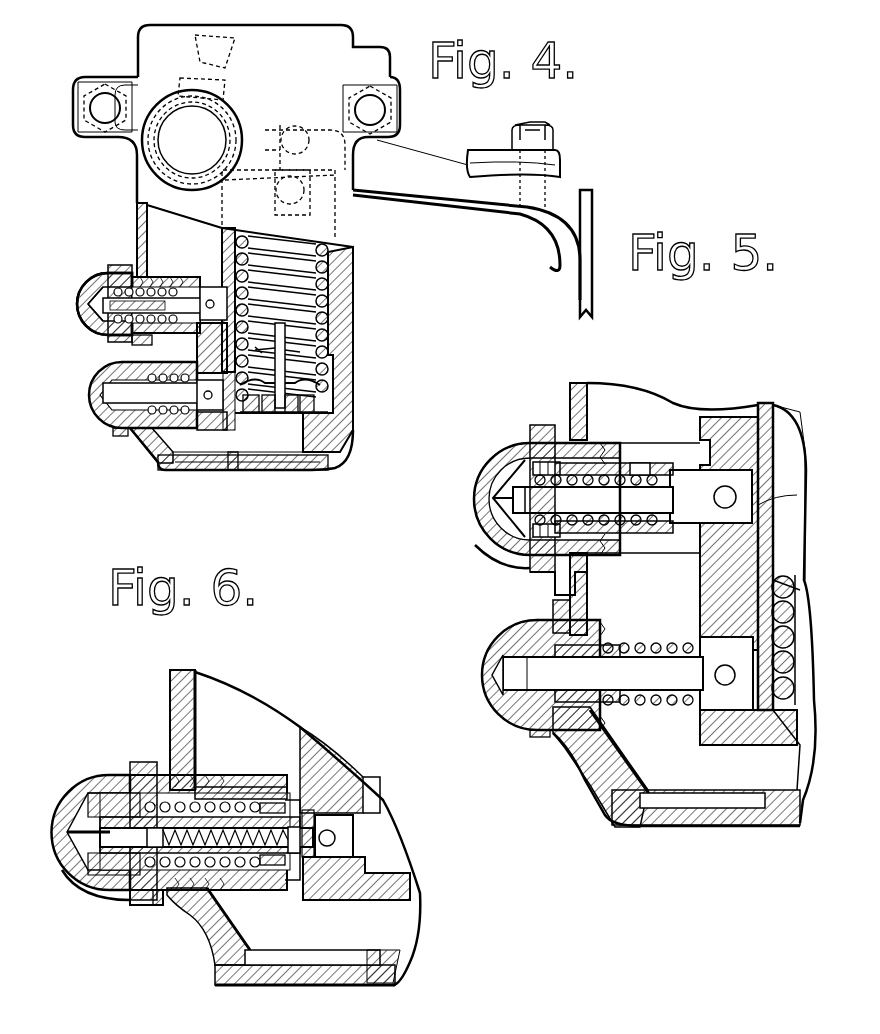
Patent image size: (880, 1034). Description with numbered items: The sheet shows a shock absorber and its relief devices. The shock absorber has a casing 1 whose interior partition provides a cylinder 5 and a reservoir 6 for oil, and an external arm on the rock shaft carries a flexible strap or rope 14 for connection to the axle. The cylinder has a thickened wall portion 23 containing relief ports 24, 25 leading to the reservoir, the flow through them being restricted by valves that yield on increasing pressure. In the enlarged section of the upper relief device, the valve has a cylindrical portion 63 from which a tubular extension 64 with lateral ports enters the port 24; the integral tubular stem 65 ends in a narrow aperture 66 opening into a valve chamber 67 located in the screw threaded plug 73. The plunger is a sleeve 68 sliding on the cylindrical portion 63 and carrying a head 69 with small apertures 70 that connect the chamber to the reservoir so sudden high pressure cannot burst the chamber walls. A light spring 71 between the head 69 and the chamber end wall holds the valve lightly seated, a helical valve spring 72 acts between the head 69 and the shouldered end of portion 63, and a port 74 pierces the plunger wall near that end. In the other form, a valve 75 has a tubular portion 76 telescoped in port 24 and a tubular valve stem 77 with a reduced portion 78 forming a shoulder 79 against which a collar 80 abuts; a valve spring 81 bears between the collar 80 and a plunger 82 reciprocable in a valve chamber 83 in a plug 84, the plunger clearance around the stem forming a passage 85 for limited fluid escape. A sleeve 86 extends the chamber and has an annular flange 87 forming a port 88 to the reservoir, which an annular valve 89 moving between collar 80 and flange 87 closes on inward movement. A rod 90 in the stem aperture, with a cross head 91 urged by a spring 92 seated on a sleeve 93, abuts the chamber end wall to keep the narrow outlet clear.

In FIG. 4, the casing 1 is at (352, 322).
In FIG. 4, the cylinder 5 is at (330, 390).
In FIG. 5, the cylinder 5 is at (795, 560).
In FIG. 6, the cylinder 5 is at (405, 862).
In FIG. 4, the reservoir 6 is at (152, 233).
In FIG. 5, the reservoir 6 is at (680, 420).
In FIG. 4, the strap or rope 14 is at (580, 280).
In FIG. 4, the thickened wall portion 23 is at (197, 355).
In FIG. 5, the thickened wall portion 23 is at (702, 585).
In FIG. 4, the relief port 24 is at (215, 280).
In FIG. 5, the relief port 24 is at (773, 425).
In FIG. 4, the relief port 25 is at (200, 428).
In FIG. 5, the relief port 25 is at (641, 652).
In FIG. 6, the relief port 25 is at (360, 825).
In FIG. 4, the cylindrical portion 63 is at (190, 298).
In FIG. 5, the cylindrical portion 63 is at (690, 470).
In FIG. 5, the tubular extension 64 is at (777, 502).
In FIG. 5, the tubular stem 65 is at (610, 465).
In FIG. 5, the narrow aperture 66 is at (495, 510).
In FIG. 4, the valve chamber 67 is at (80, 295).
In FIG. 5, the valve chamber 67 is at (490, 480).
In FIG. 5, the sleeve 68 is at (575, 460).
In FIG. 5, the head 69 is at (500, 555).
In FIG. 5, the small apertures 70 is at (540, 440).
In FIG. 5, the light spring 71 is at (530, 470).
In FIG. 5, the helical valve spring 72 is at (555, 590).
In FIG. 4, the screw threaded plug 73 is at (95, 330).
In FIG. 5, the screw threaded plug 73 is at (535, 565).
In FIG. 5, the aperture or port 74 is at (637, 462).
In FIG. 6, the valve 75 is at (340, 790).
In FIG. 6, the tubular portion 76 is at (355, 845).
In FIG. 6, the tubular valve stem 77 is at (290, 810).
In FIG. 6, the portion of reduced diameter 78 is at (112, 785).
In FIG. 6, the shoulder 79 is at (296, 855).
In FIG. 6, the collar 80 is at (263, 803).
In FIG. 6, the valve spring 81 is at (200, 775).
In FIG. 6, the plunger 82 is at (95, 790).
In FIG. 6, the valve chamber 83 is at (80, 850).
In FIG. 6, the plug 84 is at (112, 895).
In FIG. 6, the passage 85 is at (75, 888).
In FIG. 6, the sleeve 86 is at (228, 800).
In FIG. 6, the annular flange 87 is at (258, 787).
In FIG. 6, the port 88 is at (280, 860).
In FIG. 6, the annular valve 89 is at (268, 880).
In FIG. 6, the rod 90 is at (72, 830).
In FIG. 6, the cross head 91 is at (157, 847).
In FIG. 6, the spring 92 is at (215, 940).
In FIG. 6, the sleeve 93 is at (312, 870).